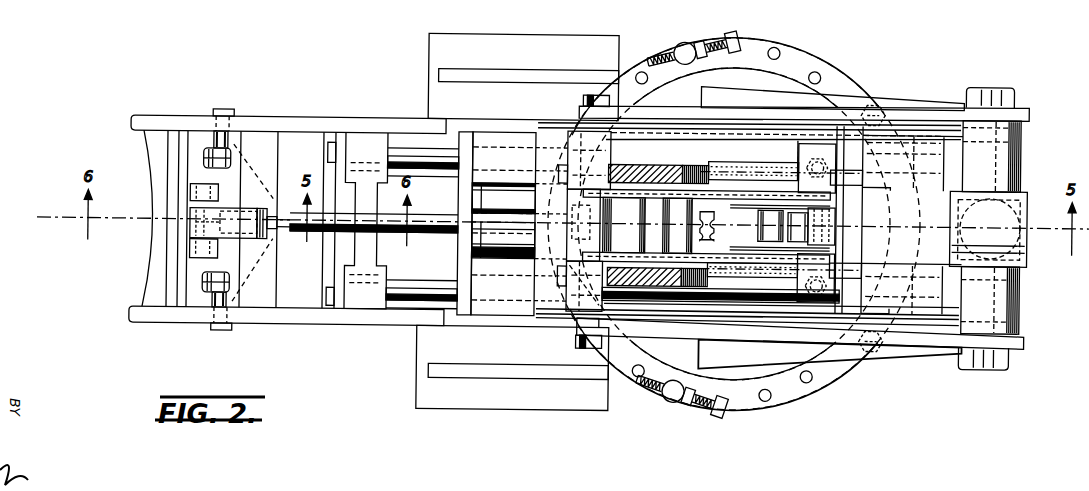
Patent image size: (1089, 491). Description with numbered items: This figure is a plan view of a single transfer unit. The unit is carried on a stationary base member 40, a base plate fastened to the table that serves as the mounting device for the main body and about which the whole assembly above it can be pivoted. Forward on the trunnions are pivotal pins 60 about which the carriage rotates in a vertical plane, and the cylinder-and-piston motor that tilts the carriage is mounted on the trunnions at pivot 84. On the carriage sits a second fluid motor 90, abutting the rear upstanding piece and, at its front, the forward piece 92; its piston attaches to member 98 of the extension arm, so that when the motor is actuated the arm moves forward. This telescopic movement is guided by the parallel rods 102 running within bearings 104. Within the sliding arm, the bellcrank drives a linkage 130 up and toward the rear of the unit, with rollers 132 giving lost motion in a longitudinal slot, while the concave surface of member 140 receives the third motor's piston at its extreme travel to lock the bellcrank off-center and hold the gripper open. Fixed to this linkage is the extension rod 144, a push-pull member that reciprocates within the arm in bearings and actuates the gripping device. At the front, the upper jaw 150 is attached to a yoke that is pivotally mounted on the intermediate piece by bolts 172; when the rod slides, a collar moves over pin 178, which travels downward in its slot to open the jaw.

The stationary base member 40 is at (795, 388).
The pivotal pins 60 is at (582, 333).
The pivot 84 is at (1020, 138).
The second fluid motor 90 is at (941, 211).
The forward piece 92 is at (462, 259).
The member of the extension arm 98 is at (360, 310).
The parallel rods 102 is at (400, 150).
The bearings 104 is at (494, 311).
The linkage 130 is at (658, 187).
The rollers 132 is at (632, 200).
The member 140 is at (712, 203).
The extension rod 144 is at (321, 231).
The upper jaw 150 is at (152, 322).
The bolts 172 is at (230, 157).
The pin 178 is at (218, 195).